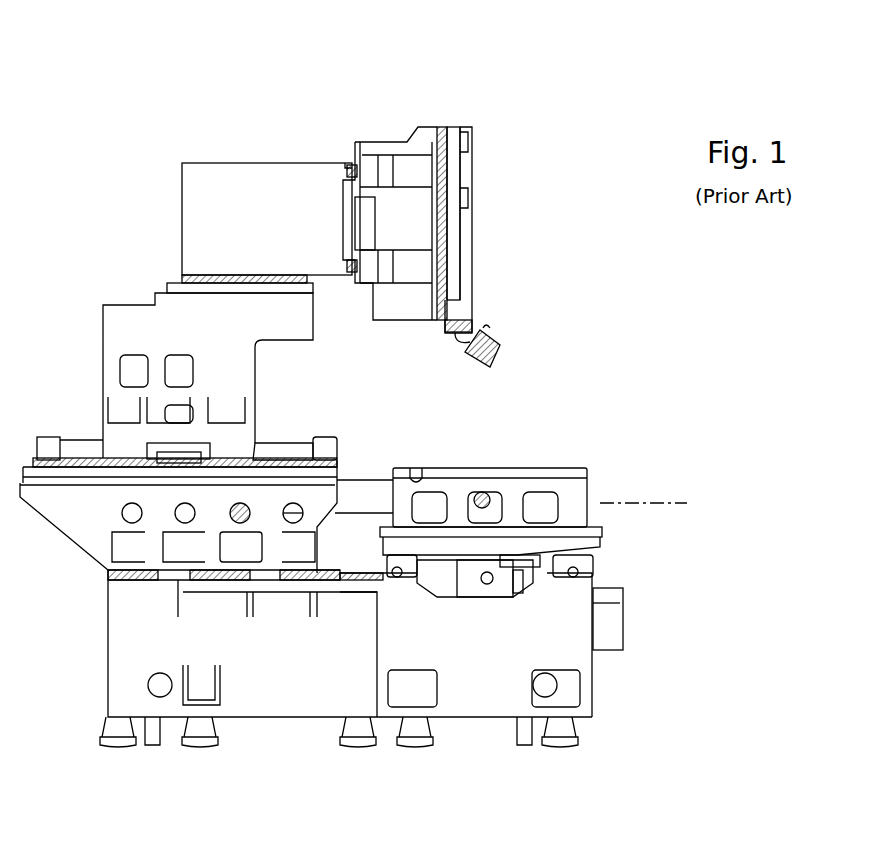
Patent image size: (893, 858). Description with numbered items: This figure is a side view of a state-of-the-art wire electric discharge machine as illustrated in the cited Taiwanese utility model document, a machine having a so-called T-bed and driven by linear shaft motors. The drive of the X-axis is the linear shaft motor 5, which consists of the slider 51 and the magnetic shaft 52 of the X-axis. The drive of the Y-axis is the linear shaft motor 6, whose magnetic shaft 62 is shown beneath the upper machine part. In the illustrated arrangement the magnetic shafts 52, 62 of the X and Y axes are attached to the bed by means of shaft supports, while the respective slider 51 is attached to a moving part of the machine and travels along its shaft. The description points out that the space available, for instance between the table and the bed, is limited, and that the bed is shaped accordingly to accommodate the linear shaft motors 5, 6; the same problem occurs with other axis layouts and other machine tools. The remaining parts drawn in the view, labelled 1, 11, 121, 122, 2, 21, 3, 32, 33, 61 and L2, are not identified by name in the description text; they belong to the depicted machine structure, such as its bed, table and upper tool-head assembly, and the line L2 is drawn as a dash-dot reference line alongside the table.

The machine tool (prior art) 1 is at (90, 708).
The bed 11 is at (547, 658).
The column base 121 is at (183, 645).
The column 122 is at (92, 547).
The work table unit 2 is at (573, 492).
The table 21 is at (543, 468).
The tool head unit 3 is at (98, 273).
The spindle head 32 is at (123, 330).
The tool post 33 is at (460, 227).
The linear shaft motor of the X-axis 5 is at (667, 537).
The slider 51 is at (580, 568).
The magnetic shaft 52 is at (523, 550).
The linear shaft motor of the Y-axis 6 is at (322, 380).
The slide block 61 is at (323, 437).
The magnetic shaft of the Y-axis 62 is at (280, 438).
The axis line L2 is at (658, 506).